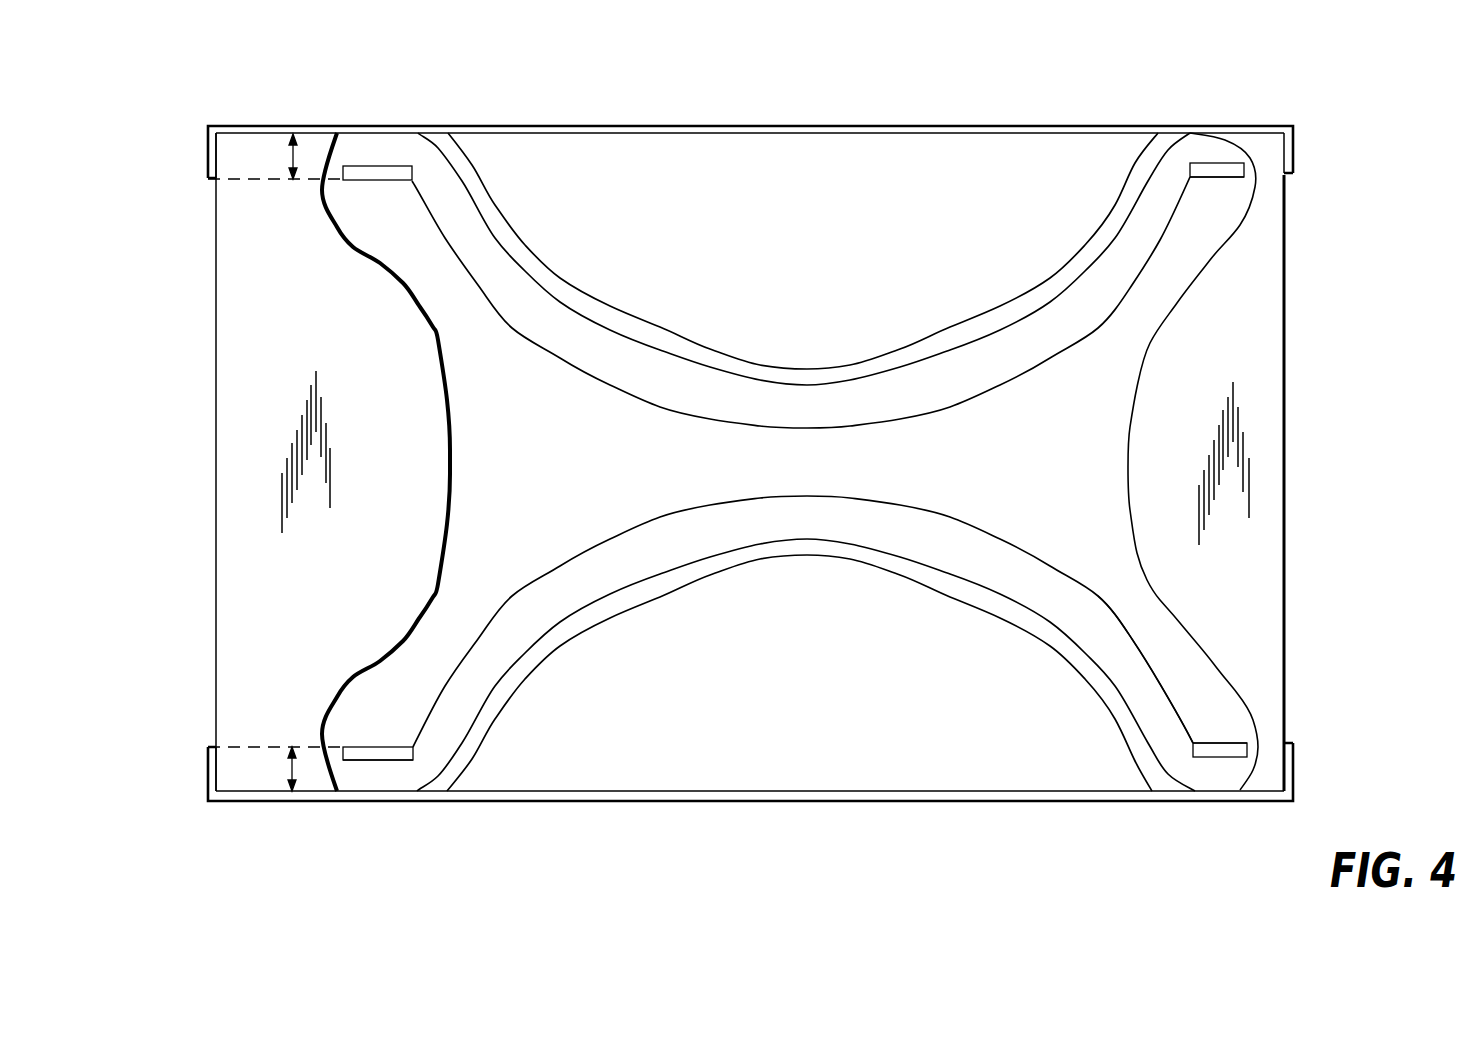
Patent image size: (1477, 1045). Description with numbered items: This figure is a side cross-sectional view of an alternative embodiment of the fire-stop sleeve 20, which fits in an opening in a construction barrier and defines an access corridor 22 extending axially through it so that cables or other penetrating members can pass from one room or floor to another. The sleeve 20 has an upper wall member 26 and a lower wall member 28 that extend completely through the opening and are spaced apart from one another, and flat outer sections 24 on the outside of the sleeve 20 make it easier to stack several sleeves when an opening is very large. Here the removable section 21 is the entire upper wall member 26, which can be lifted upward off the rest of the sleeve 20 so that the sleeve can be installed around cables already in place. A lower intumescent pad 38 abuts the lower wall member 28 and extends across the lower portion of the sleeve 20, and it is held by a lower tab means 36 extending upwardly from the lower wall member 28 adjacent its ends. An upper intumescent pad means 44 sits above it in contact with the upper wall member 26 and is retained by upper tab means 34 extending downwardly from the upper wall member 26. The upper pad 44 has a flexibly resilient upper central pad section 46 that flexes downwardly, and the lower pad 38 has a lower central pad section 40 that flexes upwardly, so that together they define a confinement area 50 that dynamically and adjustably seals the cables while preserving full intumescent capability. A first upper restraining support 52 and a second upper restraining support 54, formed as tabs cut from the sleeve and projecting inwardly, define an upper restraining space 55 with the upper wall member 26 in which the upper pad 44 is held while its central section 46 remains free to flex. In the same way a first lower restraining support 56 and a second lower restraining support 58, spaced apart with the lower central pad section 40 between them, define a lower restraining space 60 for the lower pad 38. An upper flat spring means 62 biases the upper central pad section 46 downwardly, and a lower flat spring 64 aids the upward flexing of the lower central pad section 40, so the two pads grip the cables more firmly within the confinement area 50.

The sleeve 20 is at (935, 126).
The removable section 21 is at (320, 127).
The access corridor 22 is at (511, 449).
The flat outer sections 24 is at (790, 126).
The upper wall member 26 is at (668, 126).
The lower wall member 28 is at (705, 800).
The upper tab means 34 is at (208, 153).
The lower tab means 36 is at (208, 775).
The lower intumescent pad 38 is at (1157, 733).
The lower central pad section 40 is at (918, 535).
The upper intumescent pad means 44 is at (1137, 228).
The upper central pad section 46 is at (885, 390).
The confinement area 50 is at (857, 472).
The first upper restraining support 52 is at (398, 183).
The second upper restraining support 54 is at (1223, 170).
The upper restraining space 55 is at (290, 160).
The first lower restraining support 56 is at (403, 762).
The second lower restraining support 58 is at (1210, 743).
The lower restraining space 60 is at (290, 770).
The upper flat spring means 62 is at (482, 190).
The lower flat spring 64 is at (483, 740).